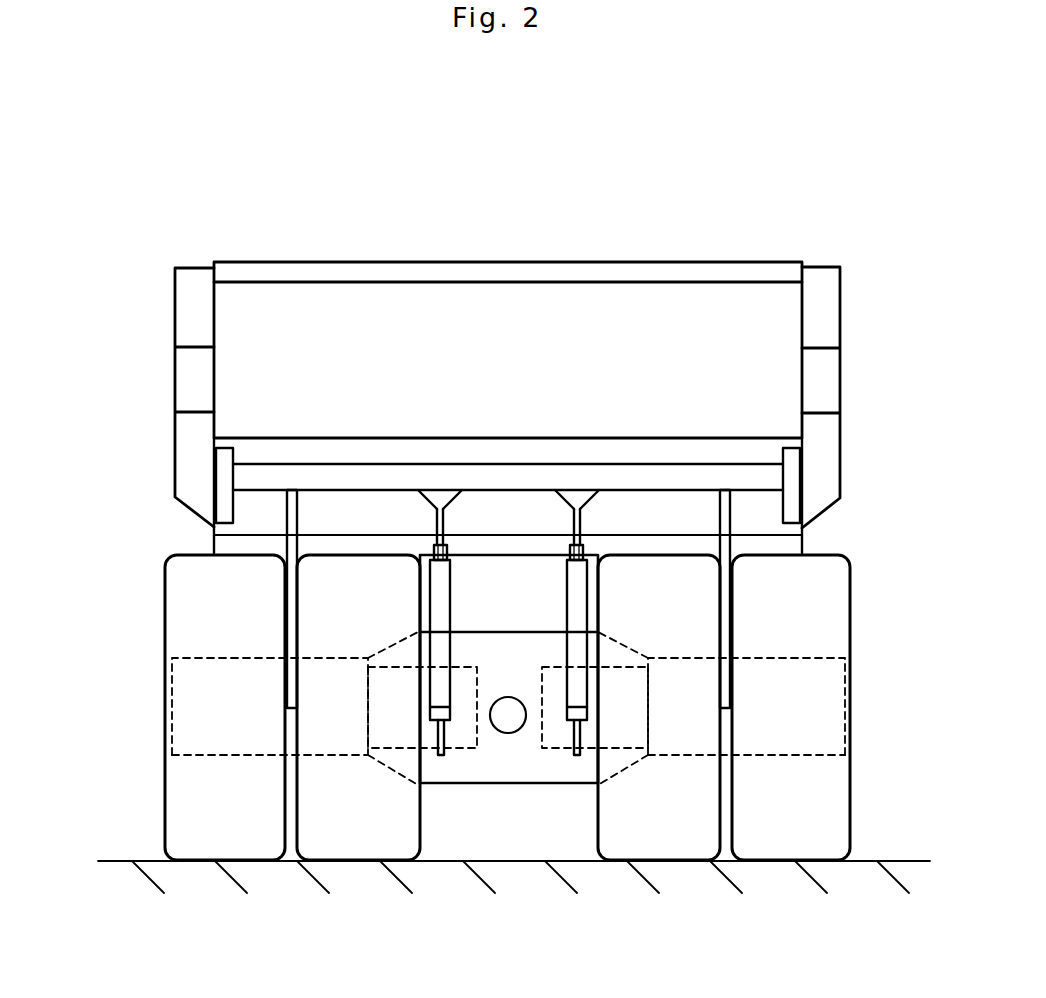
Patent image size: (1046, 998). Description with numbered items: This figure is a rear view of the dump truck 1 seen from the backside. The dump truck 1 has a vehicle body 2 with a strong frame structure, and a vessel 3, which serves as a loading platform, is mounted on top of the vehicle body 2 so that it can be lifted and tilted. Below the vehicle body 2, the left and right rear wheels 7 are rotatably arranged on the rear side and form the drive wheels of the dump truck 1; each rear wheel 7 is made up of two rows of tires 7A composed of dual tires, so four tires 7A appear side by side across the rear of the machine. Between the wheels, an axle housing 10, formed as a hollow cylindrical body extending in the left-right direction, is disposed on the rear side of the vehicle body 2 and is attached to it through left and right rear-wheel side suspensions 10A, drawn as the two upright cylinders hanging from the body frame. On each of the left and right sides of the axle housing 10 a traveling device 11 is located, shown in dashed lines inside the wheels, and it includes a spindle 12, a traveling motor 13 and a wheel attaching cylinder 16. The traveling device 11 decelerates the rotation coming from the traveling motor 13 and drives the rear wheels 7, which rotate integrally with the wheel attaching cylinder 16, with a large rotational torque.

The dump truck 1 is at (535, 228).
The vehicle body 2 is at (500, 585).
The vessel 3 is at (630, 325).
The rear wheel 7 is at (505, 772).
The tire 7A is at (233, 785).
The axle housing 10 is at (515, 753).
The rear-wheel side suspension 10A is at (438, 612).
The traveling device 11 is at (172, 697).
The spindle 12 is at (393, 770).
The traveling motor 13 is at (458, 748).
The wheel attaching cylinder 16 is at (200, 757).